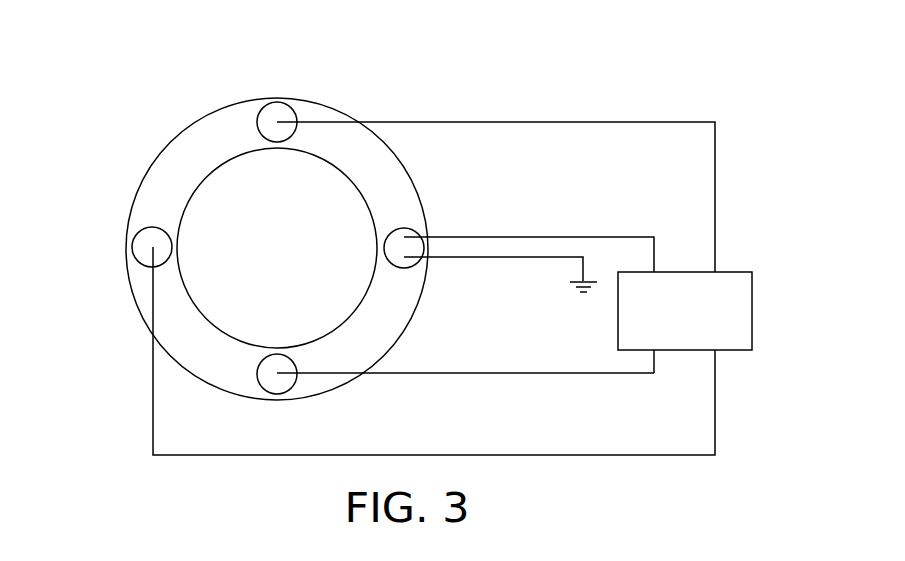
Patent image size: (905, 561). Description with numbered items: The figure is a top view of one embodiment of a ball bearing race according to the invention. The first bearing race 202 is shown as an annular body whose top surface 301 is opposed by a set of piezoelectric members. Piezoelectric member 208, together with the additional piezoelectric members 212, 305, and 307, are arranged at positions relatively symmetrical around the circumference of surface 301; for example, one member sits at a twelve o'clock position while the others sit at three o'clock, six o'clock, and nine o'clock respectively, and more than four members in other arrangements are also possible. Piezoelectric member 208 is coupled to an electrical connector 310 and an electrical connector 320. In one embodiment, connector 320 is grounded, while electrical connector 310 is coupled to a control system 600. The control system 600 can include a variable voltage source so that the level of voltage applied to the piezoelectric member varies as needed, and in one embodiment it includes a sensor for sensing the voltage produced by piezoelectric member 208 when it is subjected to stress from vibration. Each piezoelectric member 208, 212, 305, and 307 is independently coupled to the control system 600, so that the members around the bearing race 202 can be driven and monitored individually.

The first bearing race 202 is at (655, 75).
The top surface 301 is at (177, 142).
The piezoelectric member 305 is at (278, 108).
The piezoelectric member 212 is at (142, 242).
The piezoelectric member 208 is at (395, 235).
The piezoelectric member 307 is at (282, 382).
The electrical connector 310 is at (560, 236).
The electrical connector 320 is at (494, 259).
The control system 600 is at (737, 270).